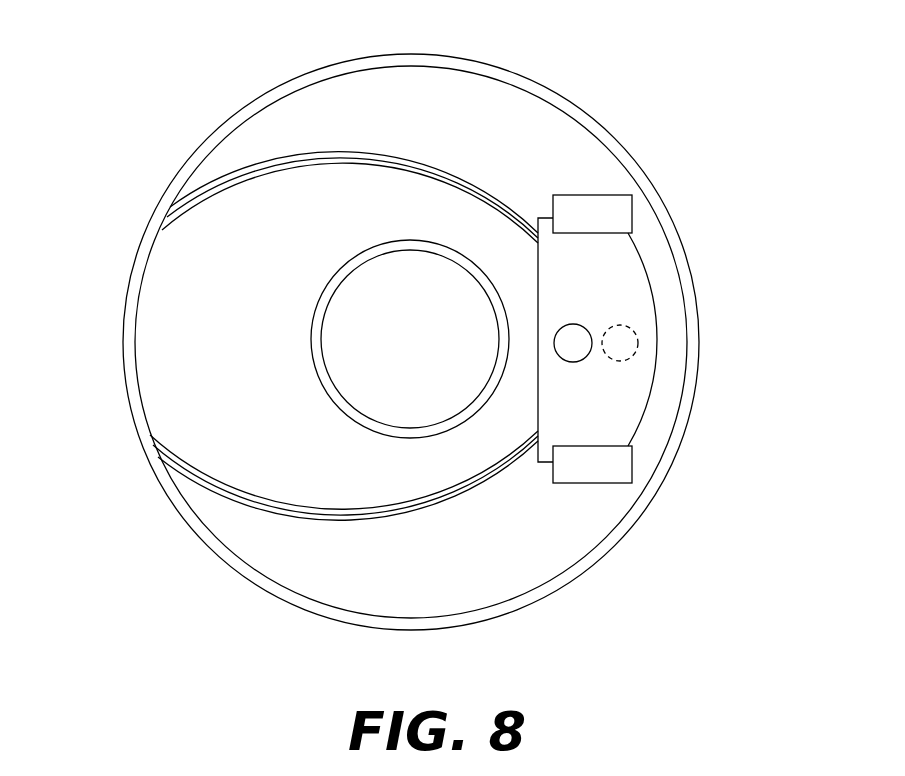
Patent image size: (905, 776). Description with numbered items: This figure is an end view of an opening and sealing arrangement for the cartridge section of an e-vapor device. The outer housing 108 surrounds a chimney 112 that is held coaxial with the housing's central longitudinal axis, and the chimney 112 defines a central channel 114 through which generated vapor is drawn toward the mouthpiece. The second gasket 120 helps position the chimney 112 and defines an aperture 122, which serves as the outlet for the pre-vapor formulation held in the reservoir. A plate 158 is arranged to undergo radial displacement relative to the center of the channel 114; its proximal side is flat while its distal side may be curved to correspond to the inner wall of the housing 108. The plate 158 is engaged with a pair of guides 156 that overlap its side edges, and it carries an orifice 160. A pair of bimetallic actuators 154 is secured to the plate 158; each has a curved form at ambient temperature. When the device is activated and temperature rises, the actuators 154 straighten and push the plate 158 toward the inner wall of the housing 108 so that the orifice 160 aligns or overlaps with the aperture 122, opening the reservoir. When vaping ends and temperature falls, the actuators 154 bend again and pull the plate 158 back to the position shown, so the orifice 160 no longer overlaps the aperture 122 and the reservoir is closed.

The housing 108 is at (547, 91).
The pair of bimetallic actuators 154 is at (288, 143).
The chimney 112 is at (318, 296).
The channel 114 is at (347, 355).
The second gasket 120 is at (582, 157).
The plate 158 is at (620, 275).
The pair of guides 156 is at (617, 214).
The orifice 160 is at (573, 335).
The aperture 122 is at (632, 345).